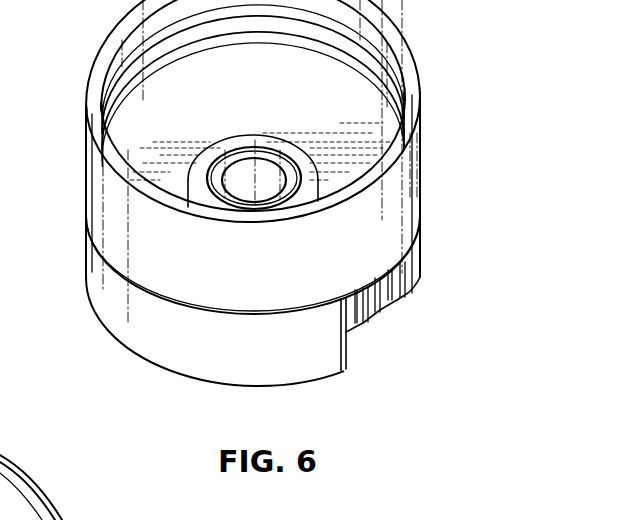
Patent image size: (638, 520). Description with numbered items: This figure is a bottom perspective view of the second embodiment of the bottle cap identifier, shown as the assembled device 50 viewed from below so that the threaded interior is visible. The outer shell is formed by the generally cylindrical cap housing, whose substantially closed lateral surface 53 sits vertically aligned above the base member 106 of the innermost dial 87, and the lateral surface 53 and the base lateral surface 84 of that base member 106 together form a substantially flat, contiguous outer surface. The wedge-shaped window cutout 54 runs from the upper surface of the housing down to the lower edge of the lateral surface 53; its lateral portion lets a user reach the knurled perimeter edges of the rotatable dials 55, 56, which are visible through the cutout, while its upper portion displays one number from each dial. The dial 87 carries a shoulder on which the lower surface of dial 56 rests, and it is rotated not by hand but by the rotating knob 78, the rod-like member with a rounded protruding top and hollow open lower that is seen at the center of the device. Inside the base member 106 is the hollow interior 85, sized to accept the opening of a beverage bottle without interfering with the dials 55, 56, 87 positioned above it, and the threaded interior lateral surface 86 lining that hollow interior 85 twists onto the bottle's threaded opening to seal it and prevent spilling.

The cap 50 is at (428, 246).
The lateral surface 53 is at (203, 350).
The window cutout 54 is at (348, 347).
The rotatable dial 55 is at (360, 320).
The rotatable dial 56 is at (379, 307).
The rotating knob 78 is at (247, 170).
The base lateral surface 84 is at (203, 258).
The hollow interior 85 is at (337, 118).
The threaded interior lateral surface 86 is at (316, 35).
The rotatable dial 87 is at (425, 128).
The base member 106 is at (97, 162).